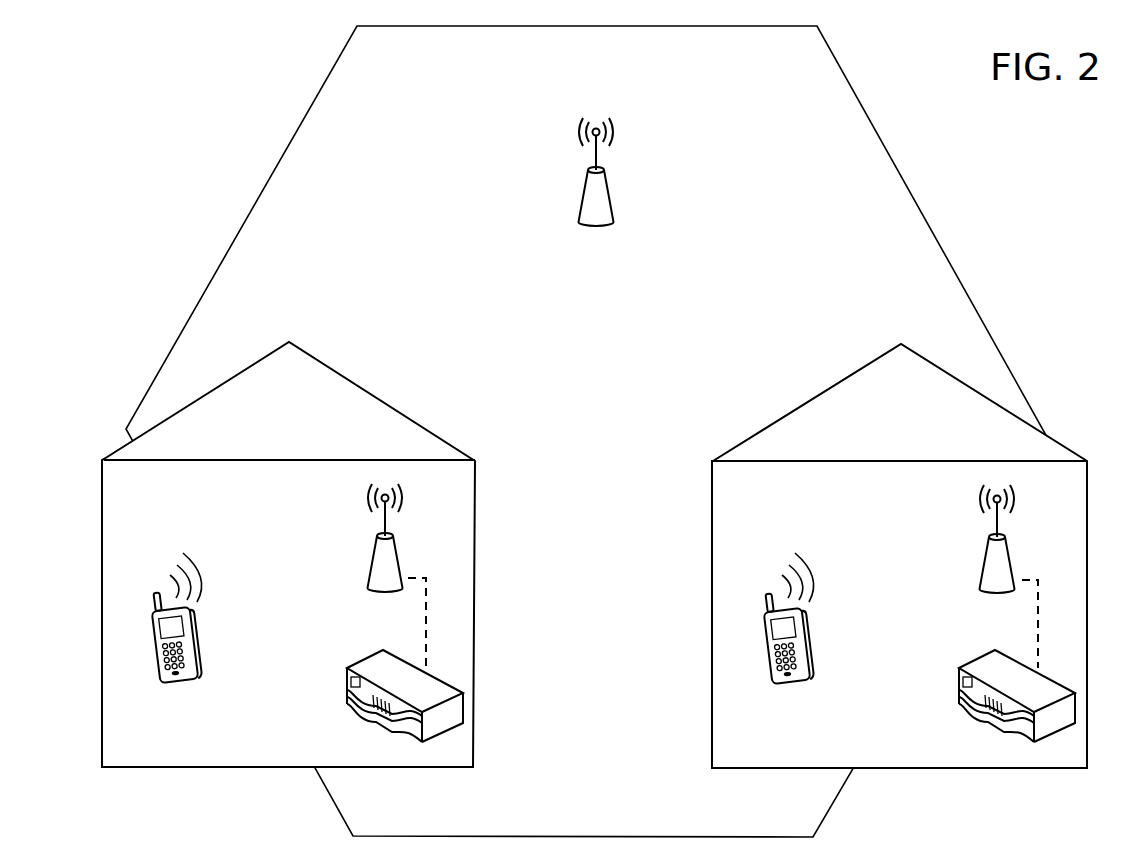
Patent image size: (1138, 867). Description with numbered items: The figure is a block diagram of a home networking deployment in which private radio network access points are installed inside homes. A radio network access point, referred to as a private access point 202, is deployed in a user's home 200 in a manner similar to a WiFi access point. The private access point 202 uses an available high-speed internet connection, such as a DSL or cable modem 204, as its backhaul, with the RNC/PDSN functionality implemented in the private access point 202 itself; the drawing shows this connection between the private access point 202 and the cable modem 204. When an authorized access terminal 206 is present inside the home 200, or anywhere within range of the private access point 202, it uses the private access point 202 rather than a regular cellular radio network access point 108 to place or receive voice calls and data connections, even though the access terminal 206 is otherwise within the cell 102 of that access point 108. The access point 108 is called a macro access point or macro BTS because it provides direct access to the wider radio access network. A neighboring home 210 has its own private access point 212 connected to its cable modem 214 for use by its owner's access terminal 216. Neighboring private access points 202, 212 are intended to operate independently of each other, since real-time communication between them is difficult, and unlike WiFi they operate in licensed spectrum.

The cell 102 is at (298, 96).
The access point 108 is at (578, 221).
The home 200 is at (228, 767).
The private access point 202 is at (367, 590).
The cable modem 204 is at (401, 667).
The access terminal 206 is at (157, 668).
The neighboring home 210 is at (822, 768).
The private access point 212 is at (979, 591).
The cable modem 214 is at (1012, 668).
The access terminal 216 is at (769, 670).